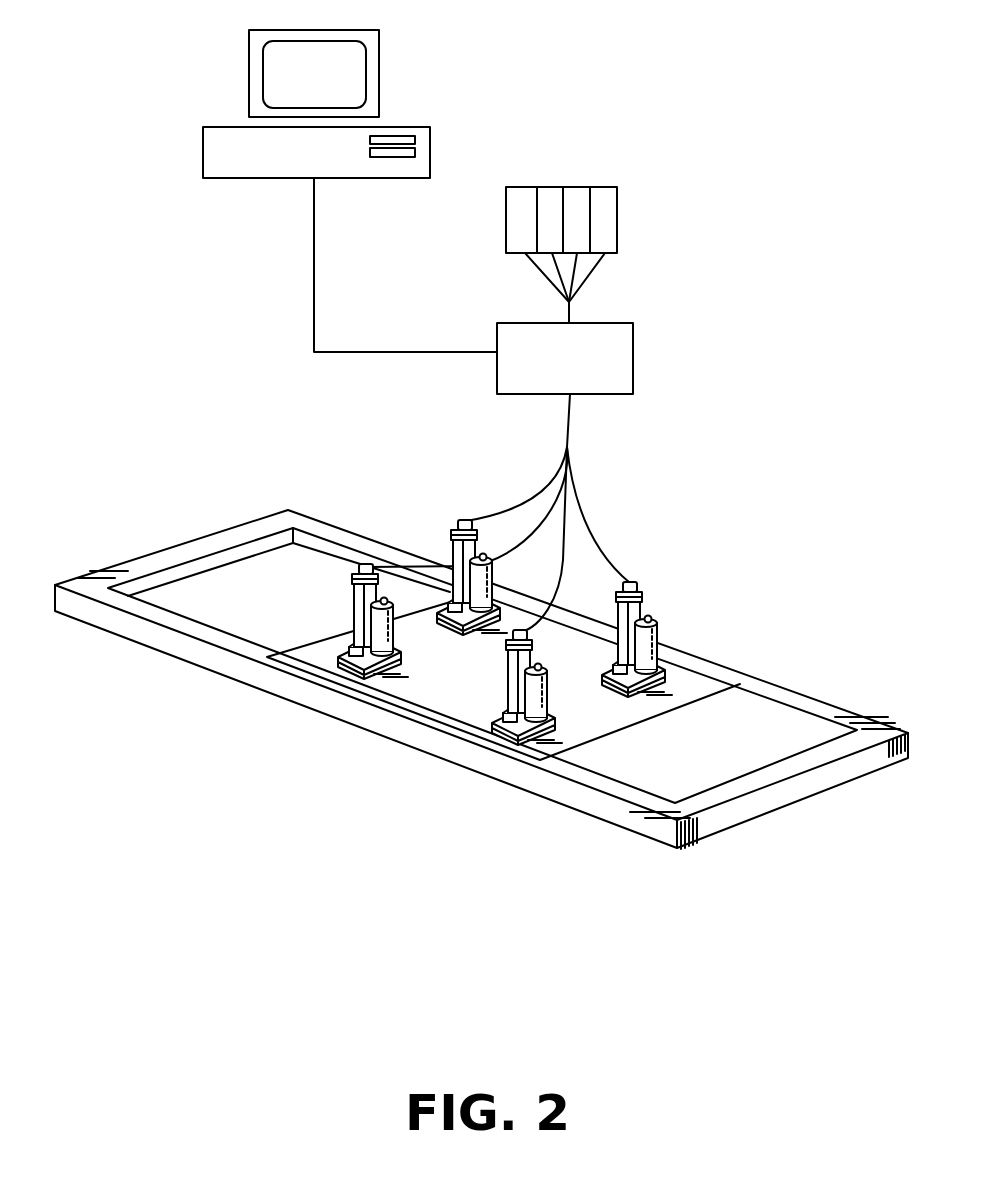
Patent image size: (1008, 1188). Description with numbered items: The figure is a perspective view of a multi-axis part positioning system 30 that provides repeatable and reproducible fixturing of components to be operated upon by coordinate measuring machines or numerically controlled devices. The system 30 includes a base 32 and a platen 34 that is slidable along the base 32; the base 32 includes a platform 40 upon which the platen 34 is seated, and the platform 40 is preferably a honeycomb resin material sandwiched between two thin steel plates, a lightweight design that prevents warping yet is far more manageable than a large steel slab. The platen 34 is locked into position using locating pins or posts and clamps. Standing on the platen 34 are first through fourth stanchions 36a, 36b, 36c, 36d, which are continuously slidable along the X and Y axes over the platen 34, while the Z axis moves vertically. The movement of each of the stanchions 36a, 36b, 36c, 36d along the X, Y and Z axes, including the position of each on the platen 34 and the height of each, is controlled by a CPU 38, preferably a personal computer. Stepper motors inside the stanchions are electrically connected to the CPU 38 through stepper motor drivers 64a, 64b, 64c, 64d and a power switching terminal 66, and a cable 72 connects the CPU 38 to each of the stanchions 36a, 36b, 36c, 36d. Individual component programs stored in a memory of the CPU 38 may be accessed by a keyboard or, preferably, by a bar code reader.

The multi-axis part positioning system 30 is at (677, 490).
The base 32 is at (817, 778).
The platen 34 is at (440, 680).
The first stanchion 36a is at (697, 638).
The second stanchion 36b is at (487, 709).
The third stanchion 36c is at (323, 616).
The fourth stanchion 36d is at (434, 530).
The CPU 38 is at (404, 83).
The platform 40 is at (640, 718).
The stepper motor driver 64a is at (513, 227).
The stepper motor driver 64b is at (547, 197).
The stepper motor driver 64c is at (577, 200).
The stepper motor driver 64d is at (605, 238).
The power switching terminal 66 is at (600, 370).
The cable 72 is at (563, 422).